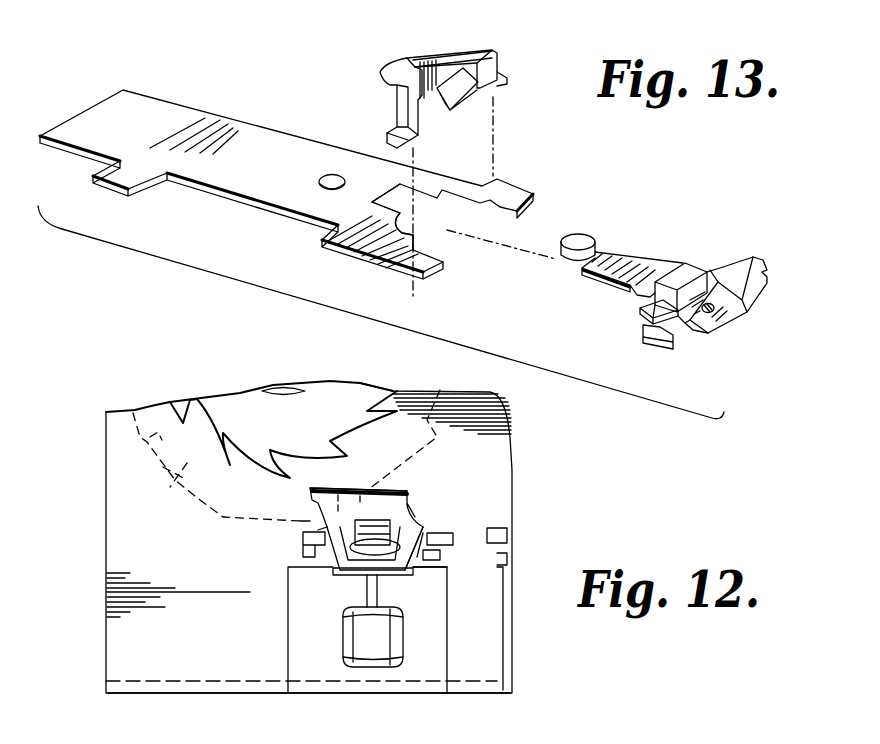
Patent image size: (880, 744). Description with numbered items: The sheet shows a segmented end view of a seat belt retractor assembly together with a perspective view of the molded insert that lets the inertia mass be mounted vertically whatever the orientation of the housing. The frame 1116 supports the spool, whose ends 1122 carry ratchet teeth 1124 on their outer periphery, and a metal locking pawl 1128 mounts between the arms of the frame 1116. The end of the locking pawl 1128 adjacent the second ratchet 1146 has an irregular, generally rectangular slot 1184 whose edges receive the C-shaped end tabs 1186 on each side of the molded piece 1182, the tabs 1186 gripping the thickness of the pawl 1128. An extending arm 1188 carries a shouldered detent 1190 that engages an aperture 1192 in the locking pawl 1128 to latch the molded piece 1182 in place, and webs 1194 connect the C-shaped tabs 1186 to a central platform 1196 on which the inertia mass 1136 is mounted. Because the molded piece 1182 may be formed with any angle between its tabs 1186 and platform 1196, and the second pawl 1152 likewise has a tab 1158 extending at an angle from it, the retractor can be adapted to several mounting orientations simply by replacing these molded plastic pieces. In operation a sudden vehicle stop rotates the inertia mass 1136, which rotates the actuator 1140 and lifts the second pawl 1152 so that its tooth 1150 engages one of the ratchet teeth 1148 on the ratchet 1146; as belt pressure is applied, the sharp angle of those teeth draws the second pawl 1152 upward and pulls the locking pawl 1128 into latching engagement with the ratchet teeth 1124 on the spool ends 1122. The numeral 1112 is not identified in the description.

In FIG. 12, the base plate 1112 is at (190, 696).
In FIG. 12, the frame 1116 is at (146, 637).
In FIG. 12, the spool ends 1122 is at (190, 478).
In FIG. 12, the ratchet teeth 1124 is at (135, 460).
In FIG. 13, the locking pawl 1128 is at (103, 117).
In FIG. 12, the locking pawl 1128 is at (315, 529).
In FIG. 12, the inertia mass 1136 is at (370, 654).
In FIG. 12, the actuator 1140 is at (365, 566).
In FIG. 12, the second ratchet 1146 is at (245, 401).
In FIG. 12, the ratchet teeth 1148 is at (170, 405).
In FIG. 13, the tooth 1150 is at (405, 70).
In FIG. 12, the tooth 1150 is at (322, 505).
In FIG. 13, the second pawl 1152 is at (448, 64).
In FIG. 12, the second pawl 1152 is at (421, 502).
In FIG. 13, the tab 1158 is at (461, 90).
In FIG. 12, the tab 1158 is at (383, 527).
In FIG. 13, the molded piece 1182 is at (730, 316).
In FIG. 12, the molded piece 1182 is at (340, 570).
In FIG. 13, the irregular slot 1184 is at (500, 209).
In FIG. 13, the C-shaped end tabs 1186 is at (657, 338).
In FIG. 12, the C-shaped end tabs 1186 is at (300, 521).
In FIG. 13, the extending arm 1188 is at (613, 288).
In FIG. 13, the shouldered detent 1190 is at (583, 236).
In FIG. 13, the aperture 1192 is at (330, 176).
In FIG. 13, the webs 1194 is at (693, 331).
In FIG. 12, the webs 1194 is at (414, 568).
In FIG. 13, the central platform 1196 is at (722, 297).
In FIG. 12, the central platform 1196 is at (395, 563).